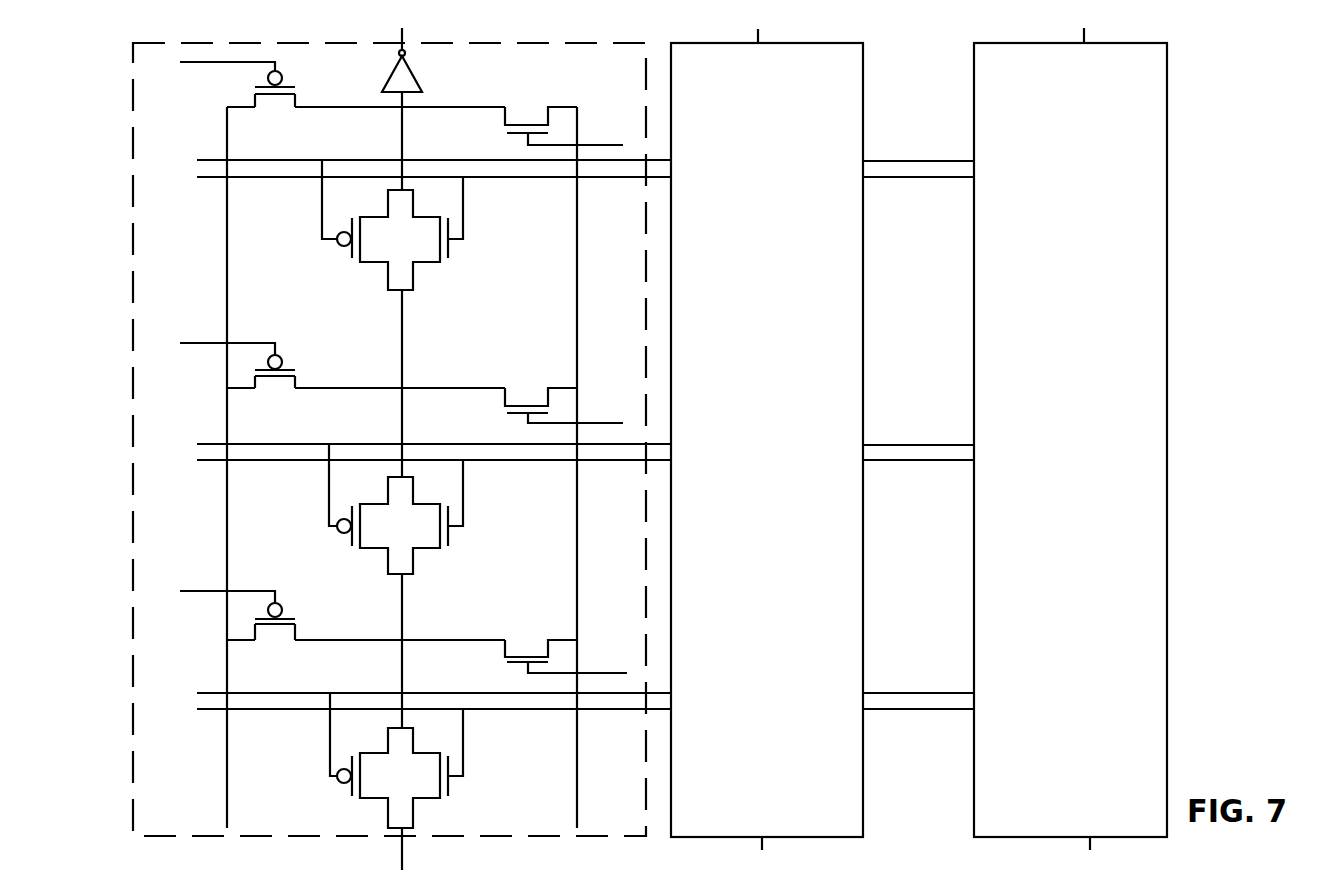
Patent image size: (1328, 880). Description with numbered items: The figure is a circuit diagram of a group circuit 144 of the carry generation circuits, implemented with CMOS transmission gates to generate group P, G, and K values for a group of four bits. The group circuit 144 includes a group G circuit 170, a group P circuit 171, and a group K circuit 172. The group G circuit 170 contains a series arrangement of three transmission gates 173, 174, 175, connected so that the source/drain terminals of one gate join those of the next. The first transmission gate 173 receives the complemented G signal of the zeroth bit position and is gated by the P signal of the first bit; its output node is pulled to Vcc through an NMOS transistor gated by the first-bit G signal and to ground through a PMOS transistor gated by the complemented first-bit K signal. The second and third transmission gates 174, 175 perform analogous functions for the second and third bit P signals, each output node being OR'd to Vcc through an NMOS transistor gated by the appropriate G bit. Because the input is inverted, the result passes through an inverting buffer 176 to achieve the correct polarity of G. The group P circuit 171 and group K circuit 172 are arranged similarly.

The group circuit 144 is at (1218, 267).
The group G circuit 170 is at (638, 71).
The group P circuit 171 is at (782, 450).
The group K circuit 172 is at (1085, 450).
The first transmission gate 173 is at (463, 816).
The second transmission gate 174 is at (447, 572).
The third transmission gate 175 is at (438, 290).
The inverting buffer 176 is at (417, 77).